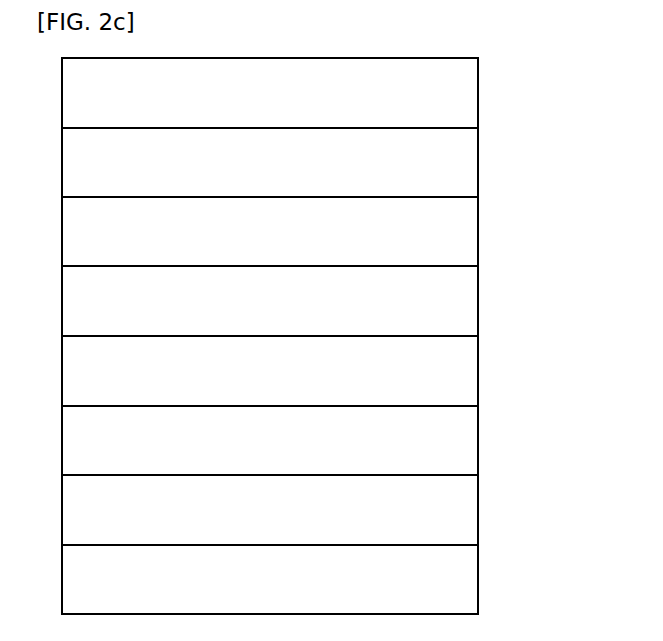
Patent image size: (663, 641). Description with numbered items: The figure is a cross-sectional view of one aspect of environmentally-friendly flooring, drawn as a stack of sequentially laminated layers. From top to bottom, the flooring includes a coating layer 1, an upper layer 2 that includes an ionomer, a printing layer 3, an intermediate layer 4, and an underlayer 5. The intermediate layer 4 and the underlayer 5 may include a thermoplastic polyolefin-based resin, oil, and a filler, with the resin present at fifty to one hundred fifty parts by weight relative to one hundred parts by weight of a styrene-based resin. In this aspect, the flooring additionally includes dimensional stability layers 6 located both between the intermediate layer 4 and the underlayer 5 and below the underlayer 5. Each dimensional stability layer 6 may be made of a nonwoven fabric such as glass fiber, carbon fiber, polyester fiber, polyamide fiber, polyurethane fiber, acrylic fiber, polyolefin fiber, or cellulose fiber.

The coating layer 1 is at (478, 90).
The upper layer 2 is at (478, 158).
The printing layer 3 is at (478, 230).
The intermediate layer 4 is at (478, 298).
The underlayer 5 is at (478, 509).
The dimensional stability layer 6 is at (478, 369).